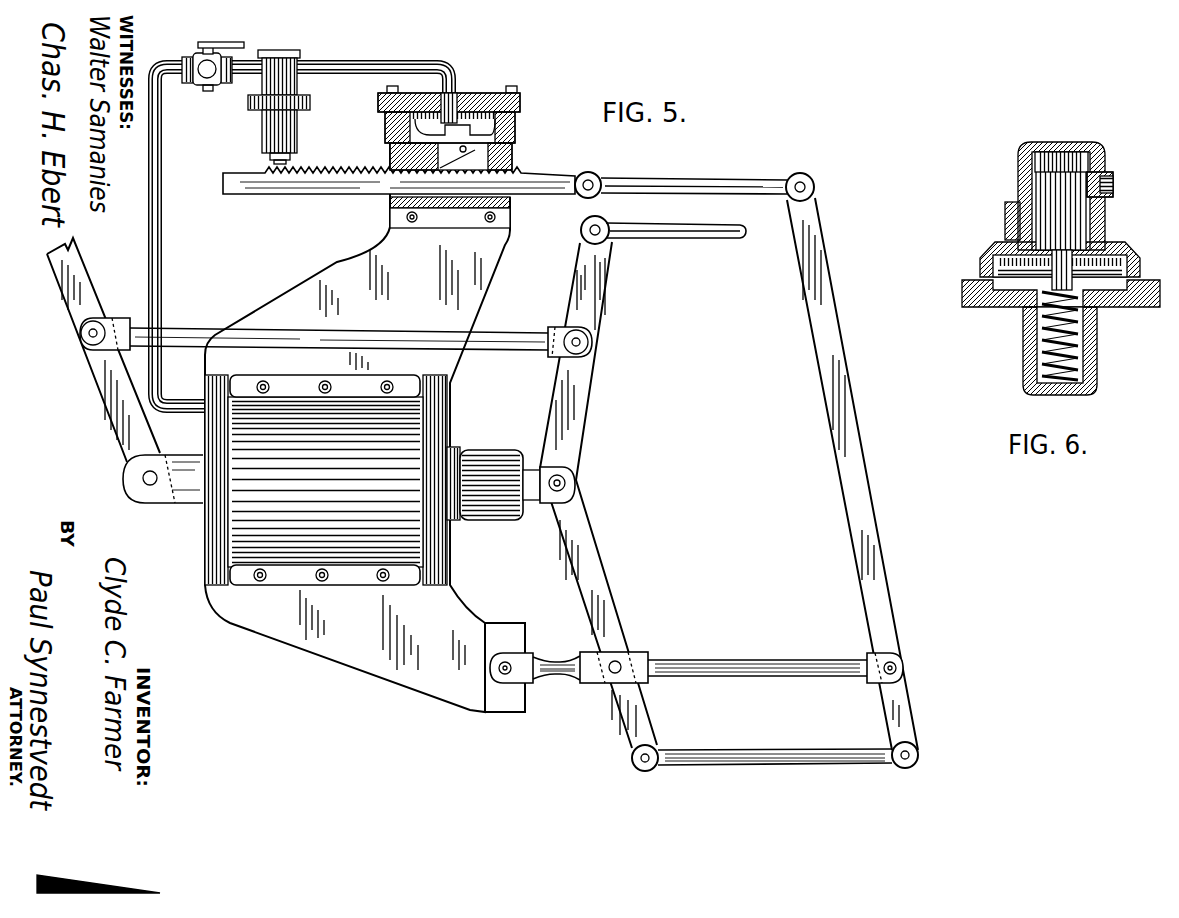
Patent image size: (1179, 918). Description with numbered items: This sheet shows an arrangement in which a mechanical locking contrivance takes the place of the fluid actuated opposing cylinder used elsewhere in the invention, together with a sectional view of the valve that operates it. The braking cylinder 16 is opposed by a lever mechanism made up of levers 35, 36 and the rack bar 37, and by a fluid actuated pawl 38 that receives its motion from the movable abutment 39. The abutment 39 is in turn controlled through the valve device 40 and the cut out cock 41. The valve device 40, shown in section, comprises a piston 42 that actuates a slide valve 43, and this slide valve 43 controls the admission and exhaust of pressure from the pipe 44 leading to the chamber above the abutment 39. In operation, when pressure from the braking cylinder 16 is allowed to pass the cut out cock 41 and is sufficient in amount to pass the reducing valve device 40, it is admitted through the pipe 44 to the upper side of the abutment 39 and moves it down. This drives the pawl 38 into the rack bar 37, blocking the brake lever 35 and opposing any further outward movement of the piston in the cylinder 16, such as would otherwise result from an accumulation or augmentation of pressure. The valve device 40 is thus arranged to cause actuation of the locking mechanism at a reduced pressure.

In FIG. 5, the braking cylinder 16 is at (410, 428).
In FIG. 5, the lever 35 is at (590, 563).
In FIG. 5, the lever 36 is at (833, 418).
In FIG. 5, the rack bar 37 is at (538, 181).
In FIG. 5, the fluid actuated pawl 38 is at (390, 151).
In FIG. 5, the movable abutment 39 is at (459, 106).
In FIG. 5, the valve device 40 is at (278, 122).
In FIG. 6, the valve device 40 is at (1118, 247).
In FIG. 5, the cut out cock 41 is at (202, 82).
In FIG. 6, the piston 42 is at (1110, 310).
In FIG. 6, the slide valve 43 is at (1088, 180).
In FIG. 5, the pipe 44 is at (400, 64).
In FIG. 6, the pipe 44 is at (1113, 185).